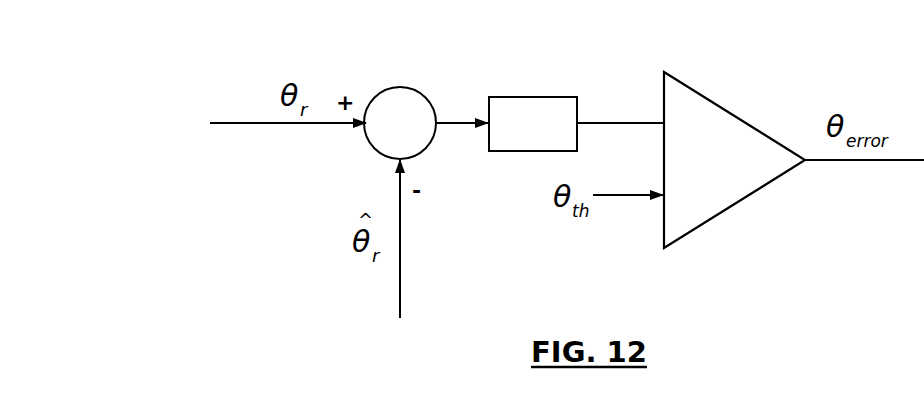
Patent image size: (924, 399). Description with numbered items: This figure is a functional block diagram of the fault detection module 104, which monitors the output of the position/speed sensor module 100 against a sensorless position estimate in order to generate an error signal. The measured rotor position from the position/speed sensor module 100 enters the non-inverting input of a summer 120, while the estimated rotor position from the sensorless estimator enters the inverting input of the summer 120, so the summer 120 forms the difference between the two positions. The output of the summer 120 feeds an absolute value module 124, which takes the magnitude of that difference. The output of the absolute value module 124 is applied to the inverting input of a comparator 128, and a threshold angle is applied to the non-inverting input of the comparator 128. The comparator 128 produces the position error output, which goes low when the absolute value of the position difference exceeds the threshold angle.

The position/speed sensor module 100 is at (763, 3).
The fault detection module 104 is at (580, 44).
The summer 120 is at (420, 89).
The absolute value module 124 is at (508, 151).
The comparator 128 is at (712, 98).